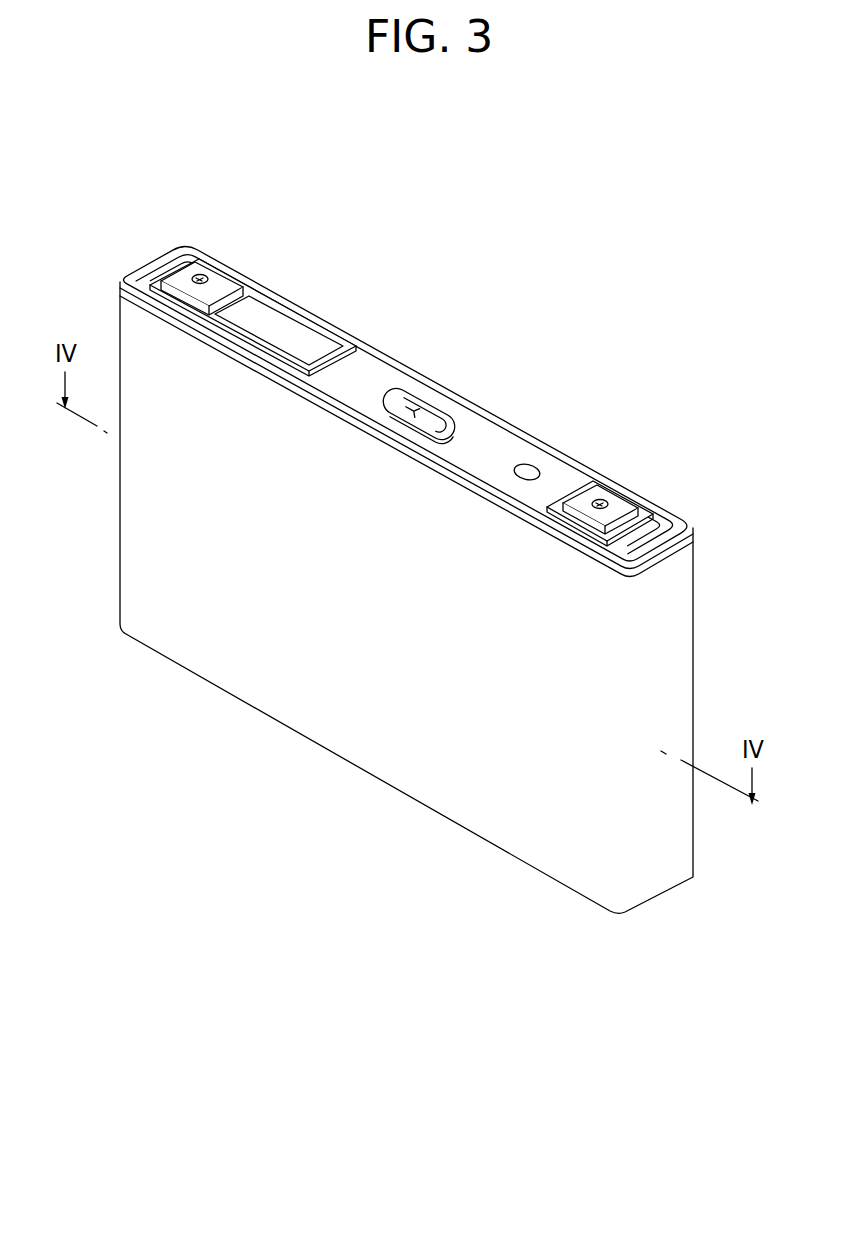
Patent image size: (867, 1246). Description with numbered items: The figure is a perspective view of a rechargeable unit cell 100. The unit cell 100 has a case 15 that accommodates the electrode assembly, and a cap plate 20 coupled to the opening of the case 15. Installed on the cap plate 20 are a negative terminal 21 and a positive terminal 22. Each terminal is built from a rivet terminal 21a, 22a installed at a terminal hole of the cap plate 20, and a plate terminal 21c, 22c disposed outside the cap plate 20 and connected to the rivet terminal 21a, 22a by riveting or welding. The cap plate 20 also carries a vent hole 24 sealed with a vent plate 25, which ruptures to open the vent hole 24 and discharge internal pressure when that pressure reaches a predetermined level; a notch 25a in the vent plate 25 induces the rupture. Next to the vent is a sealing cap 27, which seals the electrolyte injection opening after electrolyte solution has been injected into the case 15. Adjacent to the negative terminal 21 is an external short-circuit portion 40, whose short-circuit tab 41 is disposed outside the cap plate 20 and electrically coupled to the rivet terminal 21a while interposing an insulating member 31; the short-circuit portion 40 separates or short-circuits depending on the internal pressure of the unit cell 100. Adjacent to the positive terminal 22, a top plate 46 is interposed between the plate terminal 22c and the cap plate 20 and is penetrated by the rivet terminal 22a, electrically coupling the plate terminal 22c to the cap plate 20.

The unit cell 100 is at (533, 267).
The case 15 is at (327, 716).
The cap plate 20 is at (378, 376).
The negative terminal 21 is at (181, 236).
The rivet terminal 21a is at (190, 258).
The plate terminal 21c is at (226, 282).
The positive terminal 22 is at (659, 461).
The rivet terminal 22a is at (606, 511).
The plate terminal 22c is at (614, 517).
The vent hole 24 is at (412, 398).
The vent plate 25 is at (465, 362).
The notch 25a is at (437, 422).
The sealing cap 27 is at (530, 470).
The insulating member 31 is at (267, 298).
The external short-circuit portion 40 is at (272, 301).
The short-circuit tab 41 is at (320, 350).
The top plate 46 is at (622, 543).